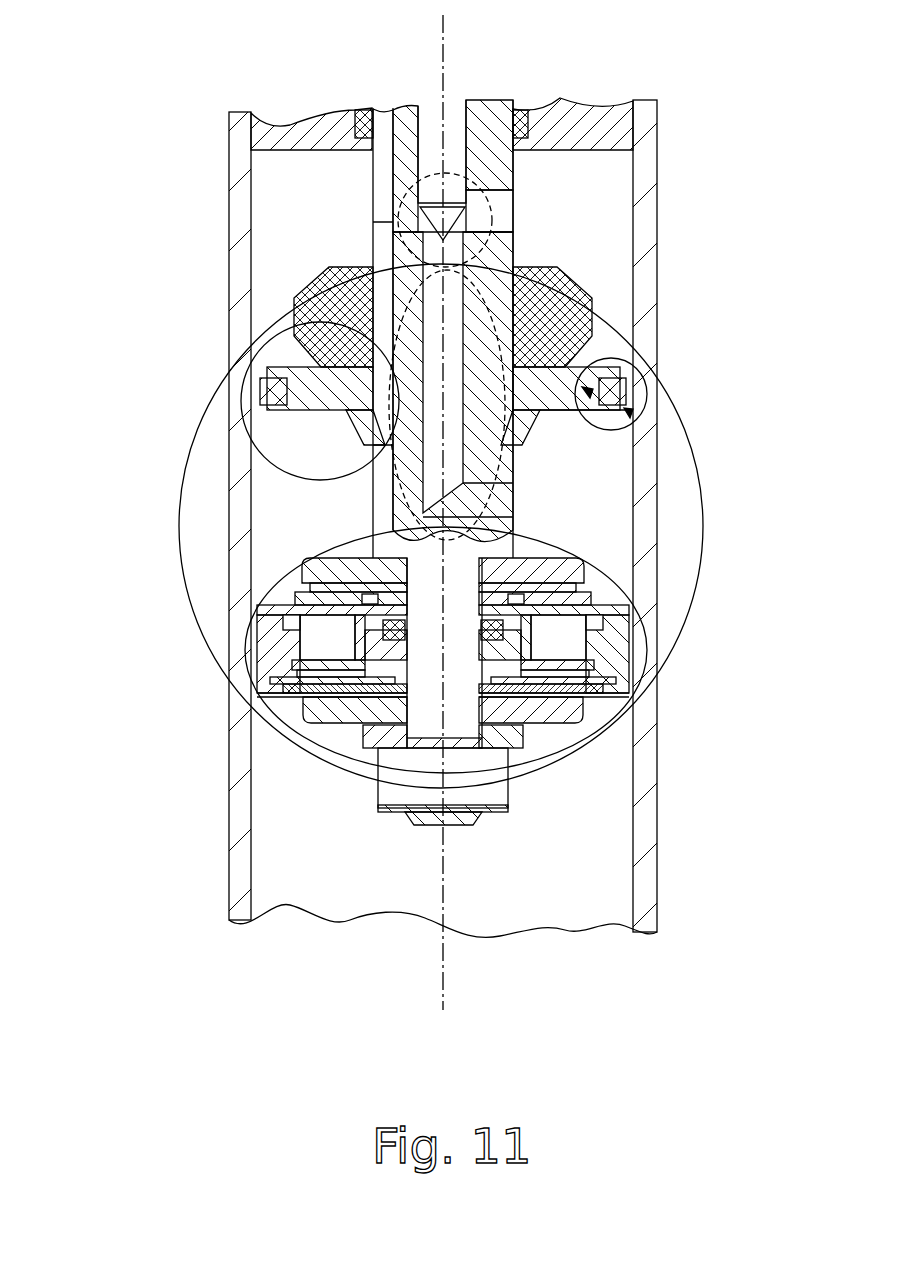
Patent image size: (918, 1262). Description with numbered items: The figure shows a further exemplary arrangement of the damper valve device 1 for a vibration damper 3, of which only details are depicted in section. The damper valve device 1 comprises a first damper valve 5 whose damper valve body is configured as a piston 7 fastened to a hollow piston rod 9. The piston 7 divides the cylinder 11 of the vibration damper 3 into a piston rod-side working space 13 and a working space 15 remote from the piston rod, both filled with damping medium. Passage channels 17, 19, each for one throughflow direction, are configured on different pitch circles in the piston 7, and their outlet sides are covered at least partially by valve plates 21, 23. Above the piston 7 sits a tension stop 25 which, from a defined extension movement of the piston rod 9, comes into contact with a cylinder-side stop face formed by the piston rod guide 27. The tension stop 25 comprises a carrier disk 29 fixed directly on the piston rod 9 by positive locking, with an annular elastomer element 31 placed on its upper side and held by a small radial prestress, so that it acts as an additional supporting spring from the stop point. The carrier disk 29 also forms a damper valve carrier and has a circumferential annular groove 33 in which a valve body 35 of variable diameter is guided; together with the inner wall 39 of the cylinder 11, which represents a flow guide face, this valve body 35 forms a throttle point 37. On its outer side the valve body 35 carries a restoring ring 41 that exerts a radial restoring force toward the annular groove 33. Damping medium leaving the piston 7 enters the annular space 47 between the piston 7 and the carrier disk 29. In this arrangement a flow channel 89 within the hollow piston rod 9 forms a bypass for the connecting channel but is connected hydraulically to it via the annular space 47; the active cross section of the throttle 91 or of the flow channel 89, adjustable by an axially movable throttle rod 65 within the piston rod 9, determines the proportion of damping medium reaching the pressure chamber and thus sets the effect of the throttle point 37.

The damper valve device 1 is at (257, 680).
The vibration damper 3 is at (160, 373).
The first damper valve 5 is at (587, 572).
The piston 7 is at (567, 647).
The piston rod 9 is at (488, 132).
The cylinder 11 is at (650, 833).
The piston rod-side working space 13 is at (587, 210).
The working space remote from the piston rod 15 is at (571, 893).
The passage channel 17 is at (608, 679).
The passage channel 19 is at (327, 643).
The valve plate 21 is at (597, 600).
The valve plate 23 is at (617, 694).
The tension stop 25 is at (352, 436).
The piston rod guide 27 is at (591, 118).
The carrier disk 29 is at (337, 397).
The annular elastomer element 31 is at (590, 309).
The annular groove 33 is at (558, 410).
The valve body 35 is at (600, 428).
The throttle point 37 is at (610, 357).
The inner wall 39 is at (622, 274).
The restoring ring 41 is at (626, 384).
The annular space 47 is at (297, 530).
The throttle rod 65 is at (437, 133).
The flow channel 89 is at (390, 262).
The throttle 91 is at (400, 222).